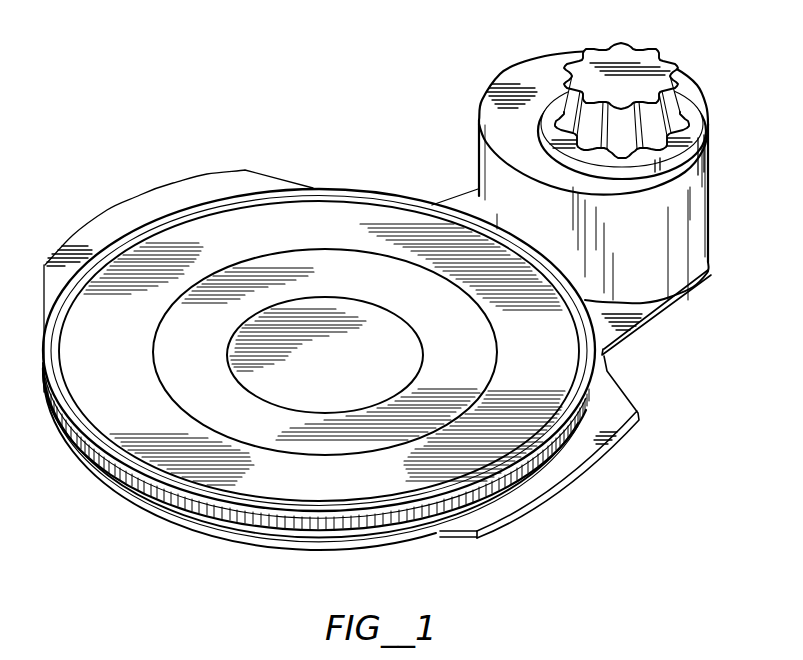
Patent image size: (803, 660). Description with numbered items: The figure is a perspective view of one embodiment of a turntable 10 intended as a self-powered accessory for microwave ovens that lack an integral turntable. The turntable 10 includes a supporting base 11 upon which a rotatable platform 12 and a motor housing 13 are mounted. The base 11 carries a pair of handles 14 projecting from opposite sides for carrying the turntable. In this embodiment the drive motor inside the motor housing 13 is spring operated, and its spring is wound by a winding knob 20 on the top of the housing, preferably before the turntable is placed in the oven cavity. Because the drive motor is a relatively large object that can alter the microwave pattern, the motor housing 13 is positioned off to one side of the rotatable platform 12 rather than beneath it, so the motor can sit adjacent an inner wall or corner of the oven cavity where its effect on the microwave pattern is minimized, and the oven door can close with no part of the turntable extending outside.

The turntable 10 is at (284, 81).
The supporting base 11 is at (648, 307).
The rotatable platform 12 is at (255, 493).
The motor housing 13 is at (480, 153).
The handles 14 is at (122, 218).
The winding knob 20 is at (652, 62).